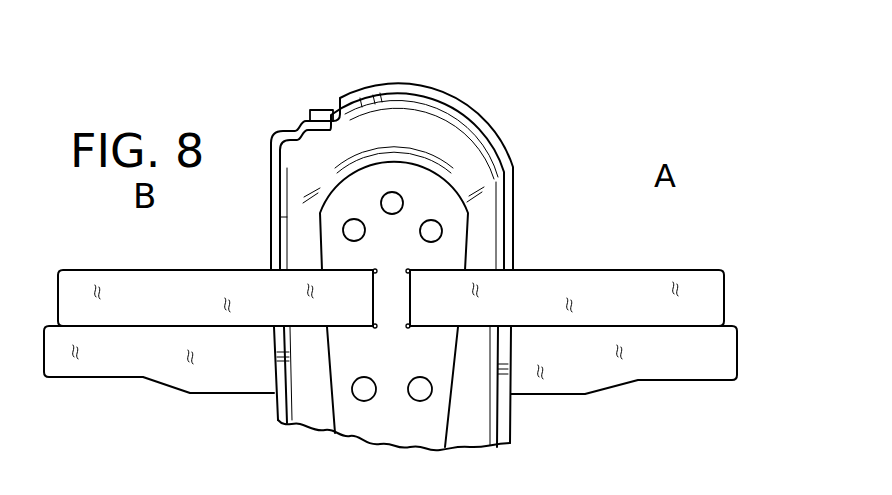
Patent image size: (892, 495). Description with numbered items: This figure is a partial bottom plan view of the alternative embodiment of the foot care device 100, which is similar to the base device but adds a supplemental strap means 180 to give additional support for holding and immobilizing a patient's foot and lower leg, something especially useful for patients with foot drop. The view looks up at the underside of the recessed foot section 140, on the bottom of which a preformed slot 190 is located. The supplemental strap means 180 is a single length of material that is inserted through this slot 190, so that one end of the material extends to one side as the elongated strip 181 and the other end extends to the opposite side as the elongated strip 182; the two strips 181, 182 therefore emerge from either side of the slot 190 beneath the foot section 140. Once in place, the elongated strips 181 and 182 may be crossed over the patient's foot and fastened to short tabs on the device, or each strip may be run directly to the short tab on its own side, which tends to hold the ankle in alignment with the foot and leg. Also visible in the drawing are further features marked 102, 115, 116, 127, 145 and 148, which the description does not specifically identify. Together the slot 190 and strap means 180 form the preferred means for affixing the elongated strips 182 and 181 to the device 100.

The foot care device 100 is at (222, 90).
The circuit board 102 is at (543, 408).
The right board portion 115 is at (697, 367).
The left board portion 116 is at (143, 366).
The apertures 127 is at (388, 202).
The recessed foot section 140 is at (432, 205).
The locating tab 145 is at (322, 108).
The outer housing wall 148 is at (432, 135).
The supplemental strap means 180 is at (562, 264).
The elongated strip 181 is at (693, 285).
The elongated strip 182 is at (120, 285).
The preformed slot 190 is at (395, 290).